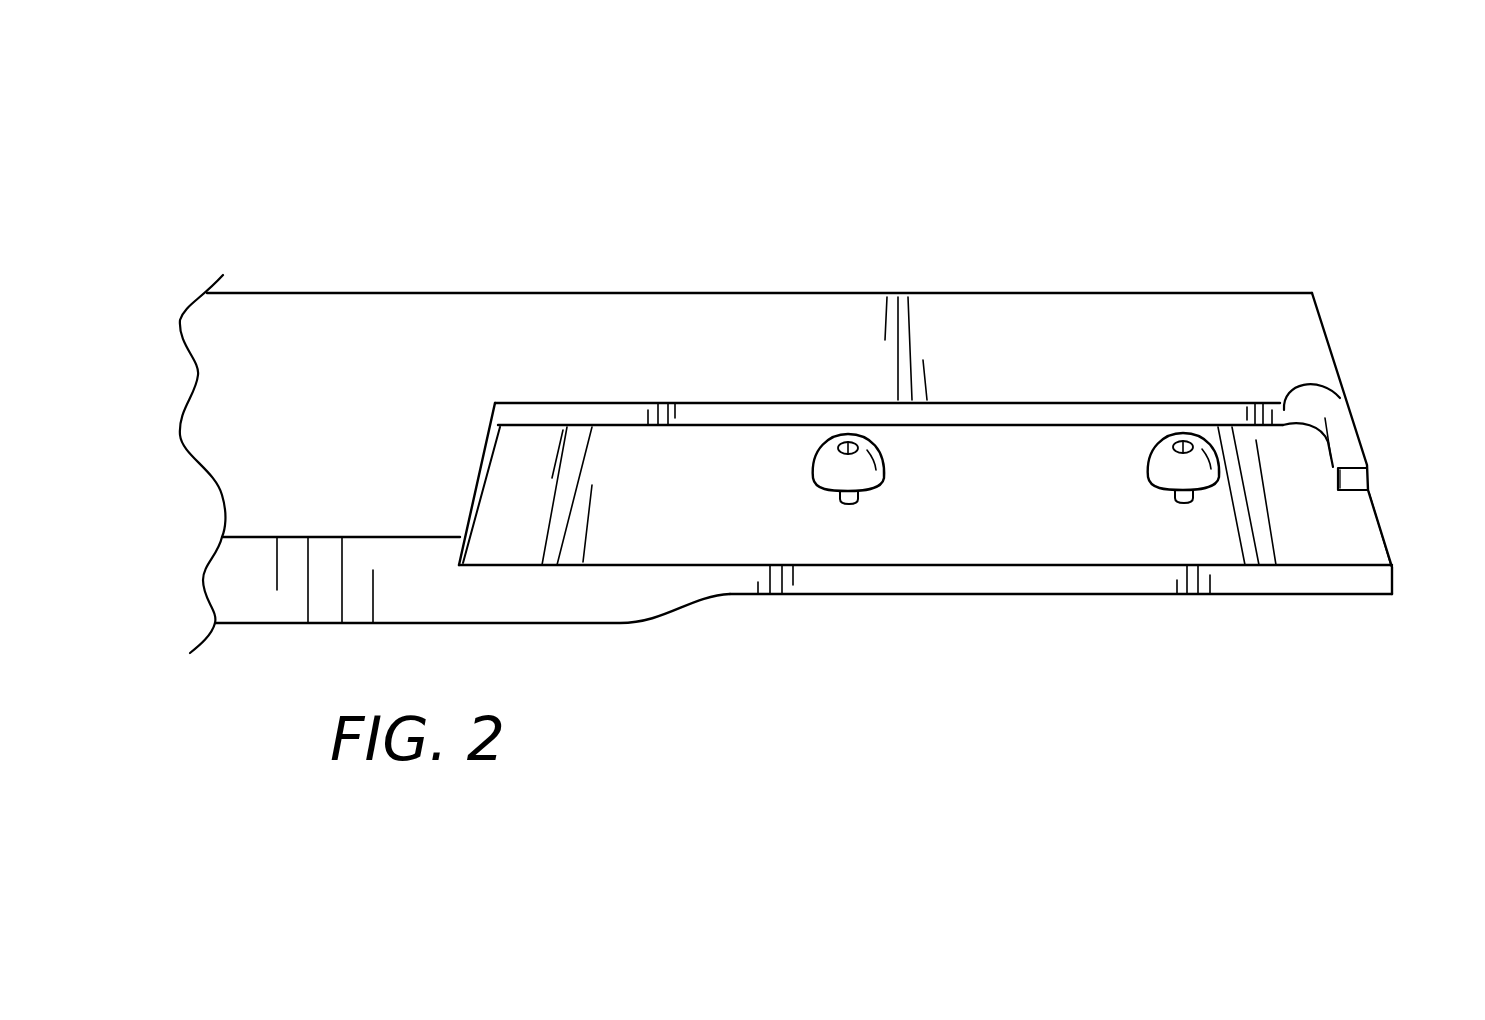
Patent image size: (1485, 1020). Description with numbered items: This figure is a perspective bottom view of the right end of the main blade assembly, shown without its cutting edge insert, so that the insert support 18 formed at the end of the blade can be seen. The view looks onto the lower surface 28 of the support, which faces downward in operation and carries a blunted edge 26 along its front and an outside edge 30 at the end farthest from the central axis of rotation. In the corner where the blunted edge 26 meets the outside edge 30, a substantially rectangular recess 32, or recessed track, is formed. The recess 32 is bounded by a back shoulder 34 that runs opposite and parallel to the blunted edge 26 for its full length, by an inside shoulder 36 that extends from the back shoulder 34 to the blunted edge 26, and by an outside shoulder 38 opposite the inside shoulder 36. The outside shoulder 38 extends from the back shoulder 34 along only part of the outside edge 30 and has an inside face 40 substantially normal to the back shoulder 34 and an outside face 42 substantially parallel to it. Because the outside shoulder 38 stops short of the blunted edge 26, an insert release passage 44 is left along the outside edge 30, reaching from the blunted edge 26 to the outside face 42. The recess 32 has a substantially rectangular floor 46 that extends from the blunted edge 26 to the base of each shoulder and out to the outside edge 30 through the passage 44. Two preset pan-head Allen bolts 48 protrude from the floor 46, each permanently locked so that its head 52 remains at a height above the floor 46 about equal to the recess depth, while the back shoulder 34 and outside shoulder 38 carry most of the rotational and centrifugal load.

The insert support 18 is at (740, 281).
The blunted edge 26 is at (960, 587).
The lower surface 28 is at (352, 400).
The outside edge 30 is at (1375, 502).
The recess 32 is at (845, 562).
The back shoulder 34 is at (927, 414).
The inside shoulder 36 is at (478, 470).
The outside shoulder 38 is at (1317, 387).
The inside face 40 is at (1348, 456).
The outside face 42 is at (1352, 485).
The insert release passage 44 is at (1368, 520).
The floor 46 is at (716, 532).
The bolts 48 is at (838, 500).
The head 52 is at (1160, 467).